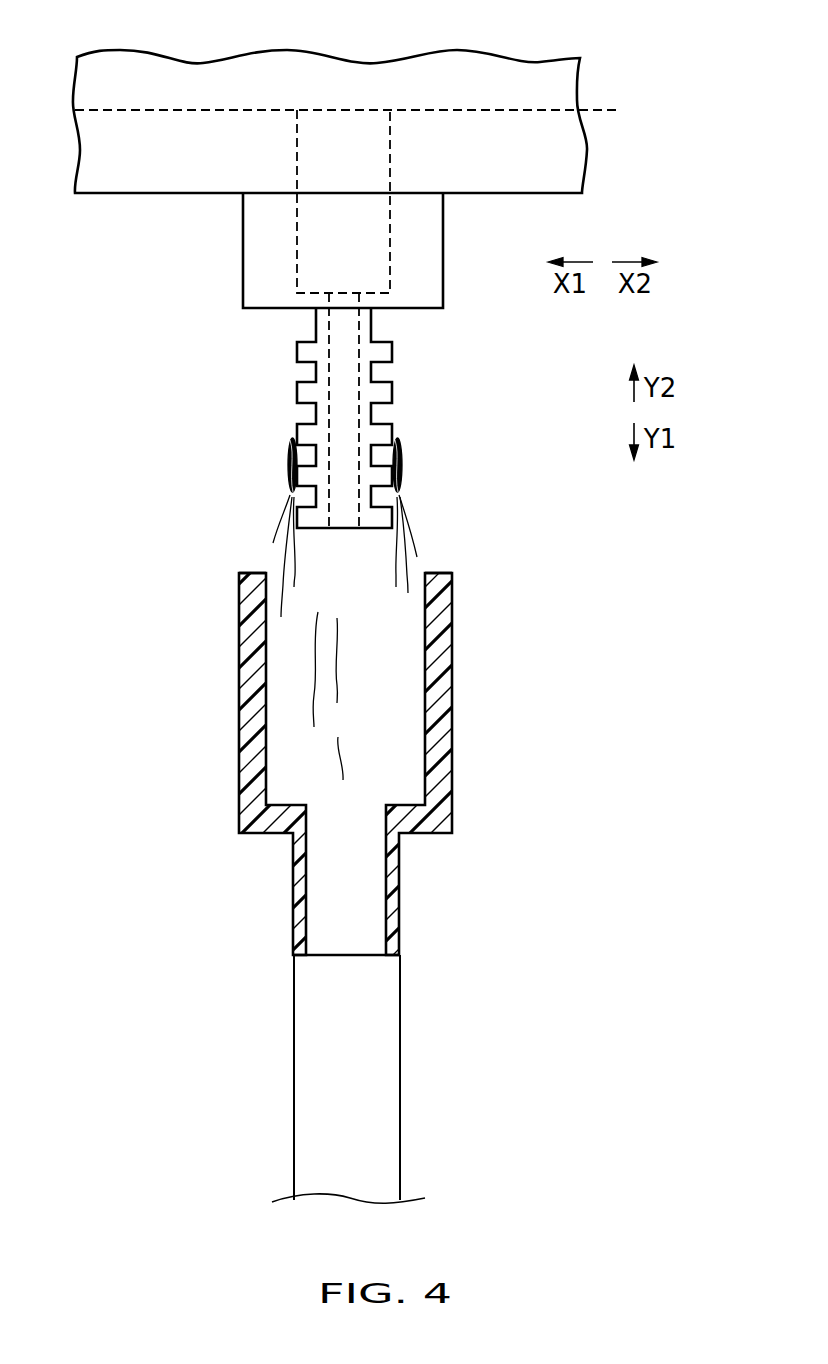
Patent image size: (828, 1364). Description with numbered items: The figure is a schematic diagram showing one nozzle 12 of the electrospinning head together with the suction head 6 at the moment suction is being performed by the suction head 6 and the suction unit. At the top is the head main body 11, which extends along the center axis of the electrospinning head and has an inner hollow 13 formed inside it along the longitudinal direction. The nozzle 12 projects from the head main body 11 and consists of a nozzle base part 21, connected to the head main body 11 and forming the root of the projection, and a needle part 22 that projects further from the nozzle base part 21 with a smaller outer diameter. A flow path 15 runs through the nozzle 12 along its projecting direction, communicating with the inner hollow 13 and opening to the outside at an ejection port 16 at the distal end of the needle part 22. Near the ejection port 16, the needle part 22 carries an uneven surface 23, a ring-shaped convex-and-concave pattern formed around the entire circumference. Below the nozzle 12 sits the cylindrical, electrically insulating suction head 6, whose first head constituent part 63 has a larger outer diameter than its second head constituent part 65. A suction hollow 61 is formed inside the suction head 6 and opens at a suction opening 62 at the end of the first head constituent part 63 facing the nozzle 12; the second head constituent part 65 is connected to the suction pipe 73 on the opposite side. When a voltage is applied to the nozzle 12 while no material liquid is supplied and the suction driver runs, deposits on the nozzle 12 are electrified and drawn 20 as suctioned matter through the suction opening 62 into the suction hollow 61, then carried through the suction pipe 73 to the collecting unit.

The head main body 11 is at (568, 148).
The inner hollow 13 is at (508, 110).
The flow path 15 is at (297, 250).
The nozzle 12 is at (376, 380).
The nozzle base part 21 is at (443, 256).
The needle part 22 is at (380, 393).
The ejection port 16 is at (343, 528).
The uneven surface 23 is at (297, 425).
The flowing adhesive 20 is at (277, 517).
The suction head 6 is at (414, 682).
The suction opening 62 is at (270, 572).
The first head constituent part 63 is at (242, 697).
The suction hollow 61 is at (405, 762).
The second head constituent part 65 is at (400, 888).
The suction pipe 73 is at (388, 1037).